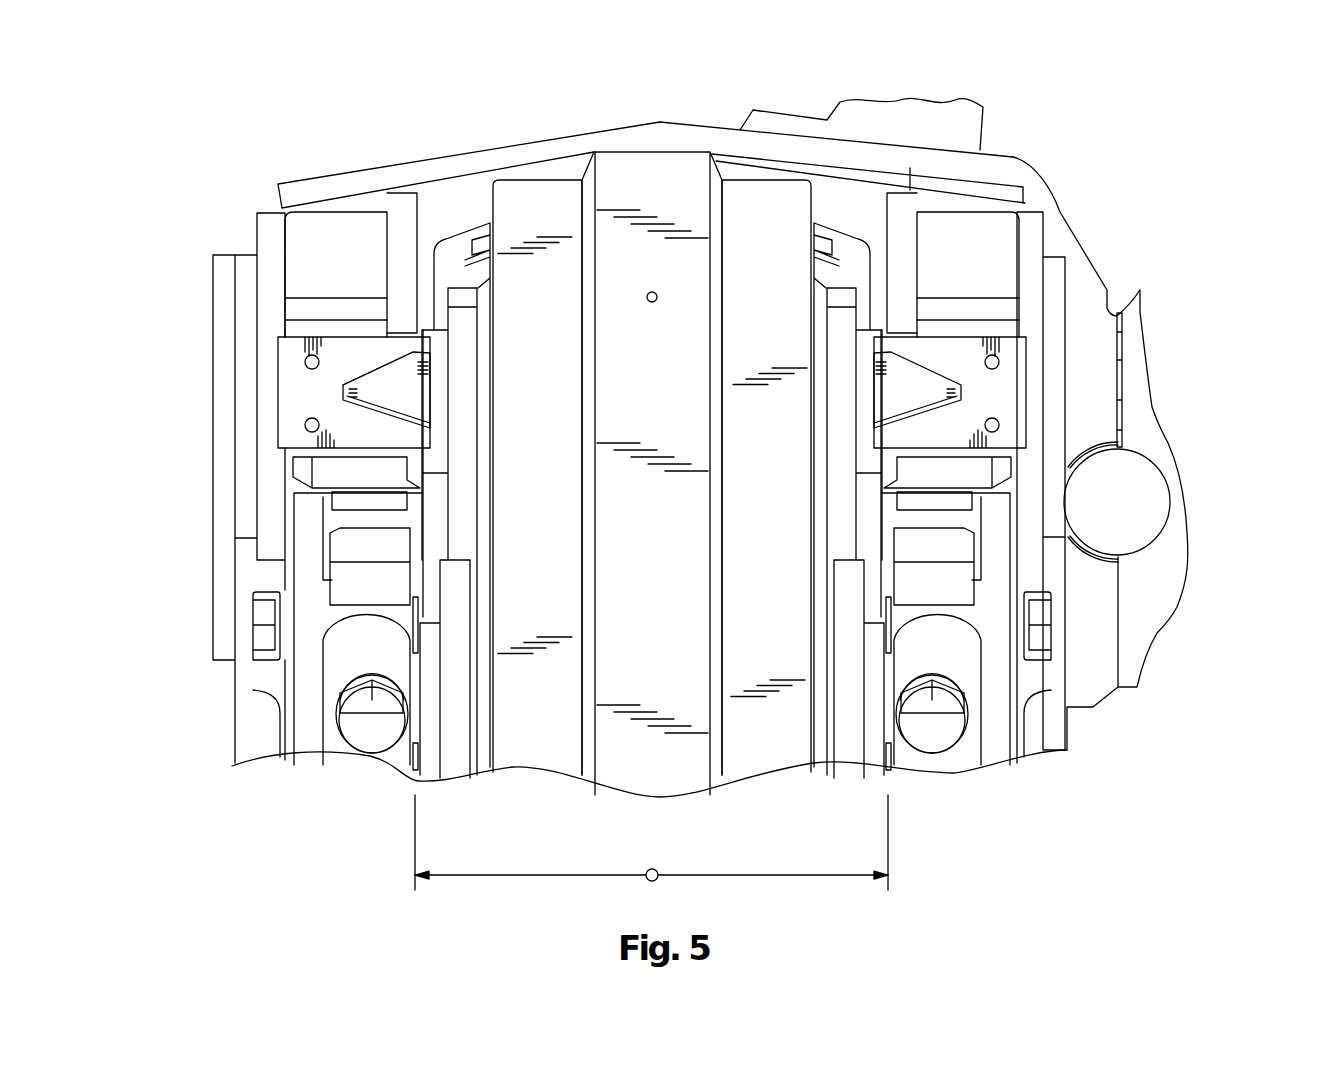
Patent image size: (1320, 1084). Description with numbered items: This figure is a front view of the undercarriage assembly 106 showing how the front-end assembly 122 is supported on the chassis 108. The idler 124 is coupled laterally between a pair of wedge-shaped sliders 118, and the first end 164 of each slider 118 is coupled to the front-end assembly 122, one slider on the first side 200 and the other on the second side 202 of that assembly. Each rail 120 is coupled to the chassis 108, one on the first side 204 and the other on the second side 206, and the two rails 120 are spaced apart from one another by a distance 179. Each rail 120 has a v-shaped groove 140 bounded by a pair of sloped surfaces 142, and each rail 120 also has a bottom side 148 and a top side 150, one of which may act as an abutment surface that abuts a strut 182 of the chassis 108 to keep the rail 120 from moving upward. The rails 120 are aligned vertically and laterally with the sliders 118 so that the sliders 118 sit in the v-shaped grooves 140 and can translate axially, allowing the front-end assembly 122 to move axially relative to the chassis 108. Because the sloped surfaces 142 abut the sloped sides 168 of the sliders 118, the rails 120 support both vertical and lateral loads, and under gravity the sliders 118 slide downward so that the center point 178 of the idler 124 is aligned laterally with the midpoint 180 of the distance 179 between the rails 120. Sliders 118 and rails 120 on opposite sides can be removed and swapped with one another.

The undercarriage assembly 106 is at (1186, 130).
The chassis 108 is at (267, 345).
The slider 118 is at (392, 385).
The rail 120 is at (360, 437).
The front-end assembly 122 is at (875, 345).
The idler 124 is at (620, 172).
The v-shaped groove 140 is at (412, 405).
The sloped surfaces 142 is at (305, 425).
The bottom side 148 is at (293, 468).
The top side 150 is at (316, 335).
The first end 164 is at (432, 422).
The sloped sides 168 is at (418, 362).
The center point 178 is at (652, 291).
The distance 179 is at (537, 878).
The midpoint 180 is at (655, 870).
The strut 182 is at (398, 237).
The first side 200 is at (463, 300).
The second side 202 is at (843, 300).
The first side 204 is at (338, 476).
The second side 206 is at (967, 472).